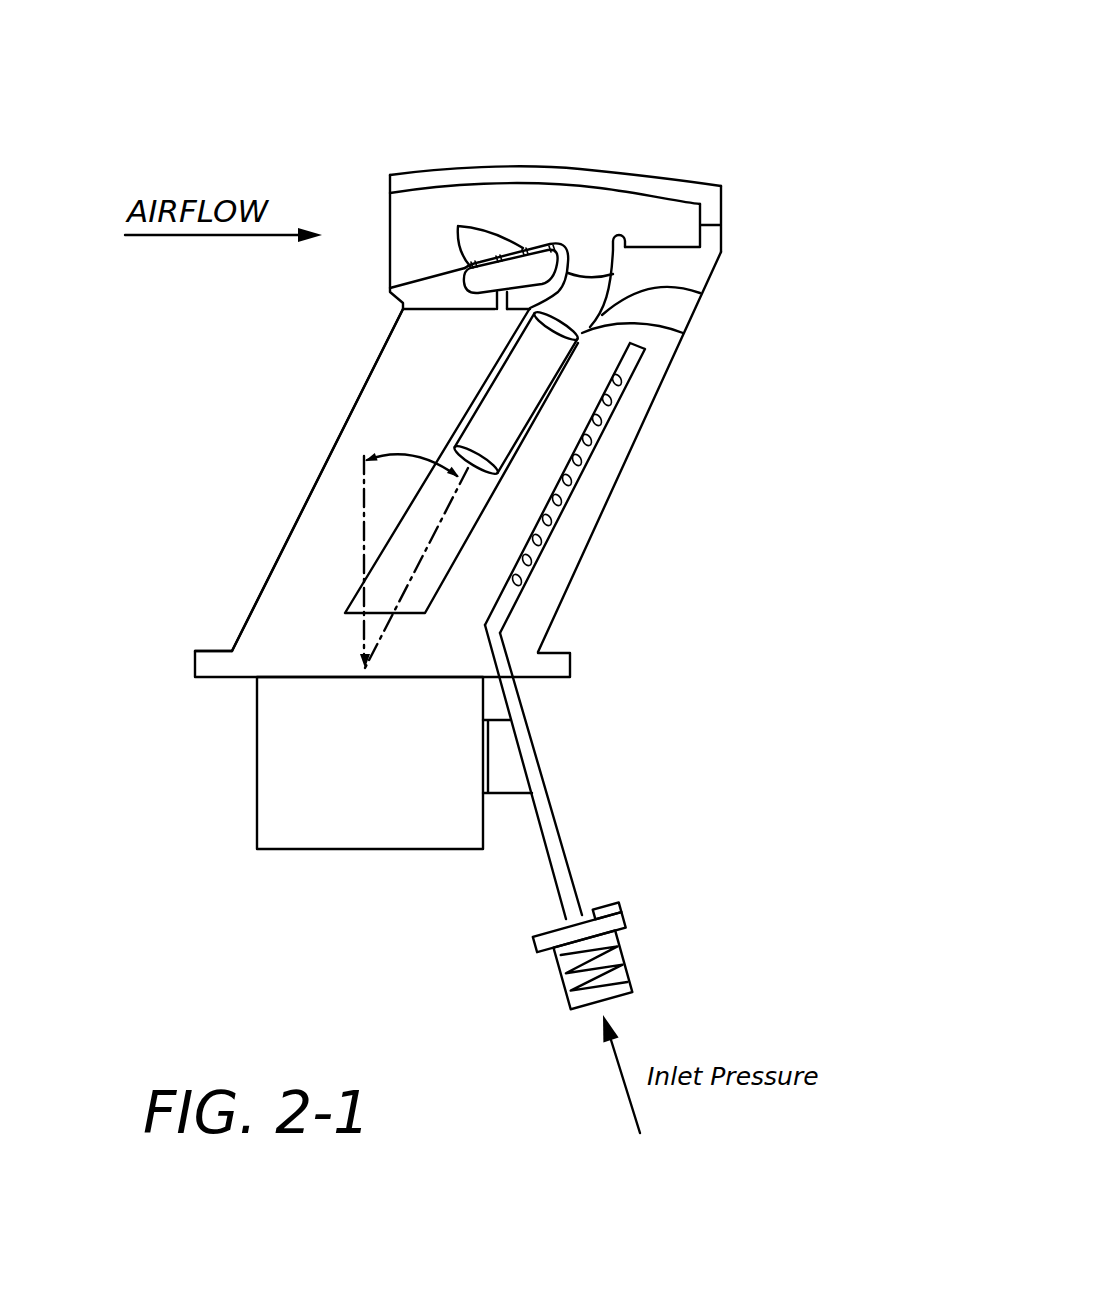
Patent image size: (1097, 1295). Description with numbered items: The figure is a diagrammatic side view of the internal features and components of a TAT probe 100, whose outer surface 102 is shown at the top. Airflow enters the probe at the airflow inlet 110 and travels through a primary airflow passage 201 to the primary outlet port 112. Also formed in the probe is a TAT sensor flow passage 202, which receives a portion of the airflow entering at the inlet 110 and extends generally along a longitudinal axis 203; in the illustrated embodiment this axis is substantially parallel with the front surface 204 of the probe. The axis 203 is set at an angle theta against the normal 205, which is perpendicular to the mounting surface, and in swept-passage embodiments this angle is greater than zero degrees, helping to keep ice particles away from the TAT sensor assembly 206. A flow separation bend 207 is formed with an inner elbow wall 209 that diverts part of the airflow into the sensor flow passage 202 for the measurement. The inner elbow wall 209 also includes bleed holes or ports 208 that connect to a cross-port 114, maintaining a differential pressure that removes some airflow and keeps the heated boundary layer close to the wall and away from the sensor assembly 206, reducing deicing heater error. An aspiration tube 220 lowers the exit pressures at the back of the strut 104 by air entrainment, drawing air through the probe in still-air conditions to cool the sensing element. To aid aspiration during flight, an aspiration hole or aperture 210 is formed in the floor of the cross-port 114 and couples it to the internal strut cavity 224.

The TAT probe 100 is at (680, 118).
The outer surface / skin of top plate 102 is at (556, 158).
The strut 104 is at (552, 622).
The airflow inlet 110 is at (390, 222).
The primary outlet port 112 is at (722, 206).
The cross-port 114 is at (470, 280).
The primary airflow passage 201 is at (507, 190).
The TAT sensor flow passage 202 is at (700, 293).
The longitudinal axis 203 is at (438, 520).
The front surface 204 is at (328, 463).
The normal 205 is at (362, 552).
The TAT sensor assembly 206 is at (683, 333).
The flow separation bend 207 is at (556, 237).
The bleed holes or ports 208 is at (491, 252).
The inner elbow wall 209 is at (613, 274).
The aspiration hole or aperture 210 is at (498, 313).
The aspiration tube 220 is at (559, 836).
The internal strut cavity 224 is at (318, 520).